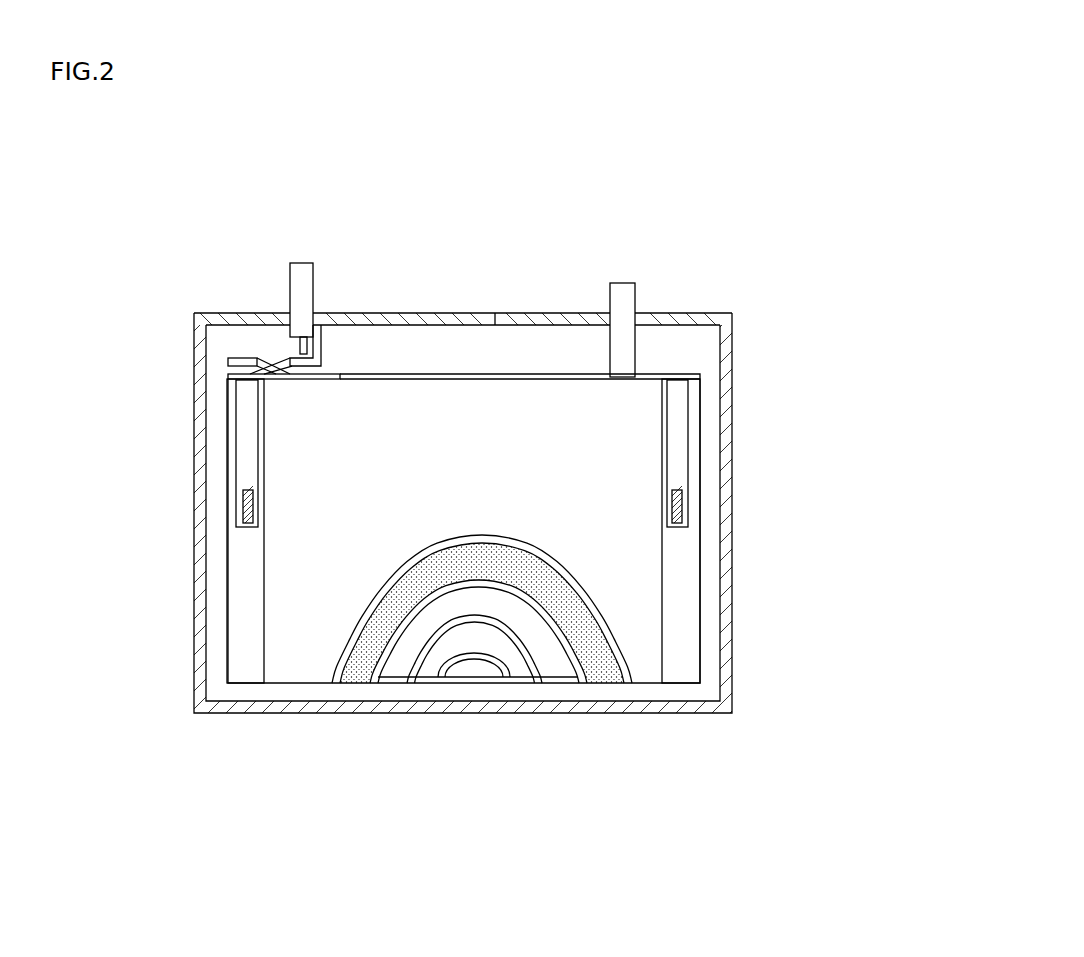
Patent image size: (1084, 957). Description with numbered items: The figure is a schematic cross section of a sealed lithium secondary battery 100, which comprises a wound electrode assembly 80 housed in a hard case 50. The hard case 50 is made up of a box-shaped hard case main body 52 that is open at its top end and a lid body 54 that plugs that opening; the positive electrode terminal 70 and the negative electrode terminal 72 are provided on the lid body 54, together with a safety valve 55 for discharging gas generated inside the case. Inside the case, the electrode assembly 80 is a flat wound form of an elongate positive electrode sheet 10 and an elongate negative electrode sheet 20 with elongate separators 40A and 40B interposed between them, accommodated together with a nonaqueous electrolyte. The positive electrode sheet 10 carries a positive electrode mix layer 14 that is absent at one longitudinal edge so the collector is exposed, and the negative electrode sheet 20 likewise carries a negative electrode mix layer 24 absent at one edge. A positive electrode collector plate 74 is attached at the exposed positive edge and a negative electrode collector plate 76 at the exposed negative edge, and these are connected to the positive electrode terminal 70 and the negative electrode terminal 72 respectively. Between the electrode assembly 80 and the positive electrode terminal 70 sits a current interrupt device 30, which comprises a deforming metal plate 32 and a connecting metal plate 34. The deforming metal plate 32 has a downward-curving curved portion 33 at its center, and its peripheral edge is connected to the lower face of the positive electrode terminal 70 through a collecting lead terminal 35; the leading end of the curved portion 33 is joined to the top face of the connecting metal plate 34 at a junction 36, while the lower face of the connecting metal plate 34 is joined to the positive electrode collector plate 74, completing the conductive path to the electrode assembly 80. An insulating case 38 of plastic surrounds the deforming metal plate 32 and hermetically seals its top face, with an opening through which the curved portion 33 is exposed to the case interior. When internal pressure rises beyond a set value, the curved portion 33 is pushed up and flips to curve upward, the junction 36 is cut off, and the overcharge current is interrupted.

The sealed lithium secondary battery 100 is at (730, 202).
The wound electrode assembly 80 is at (408, 394).
The positive electrode sheet 10 is at (353, 665).
The positive electrode mix layer 14 is at (478, 635).
The negative electrode sheet 20 is at (425, 663).
The negative electrode mix layer 24 is at (475, 652).
The separator 40A is at (293, 663).
The separator 40B is at (395, 665).
The hard case 50 is at (742, 526).
The hard case main body 52 is at (735, 660).
The lid body 54 is at (575, 313).
The safety valve 55 is at (481, 313).
The positive electrode terminal 70 is at (303, 263).
The negative electrode terminal 72 is at (620, 292).
The positive electrode collector plate 74 is at (245, 440).
The negative electrode collector plate 76 is at (678, 402).
The current interrupt device 30 is at (213, 339).
The deforming metal plate 32 is at (235, 358).
The curved portion 33 is at (222, 390).
The connecting metal plate 34 is at (310, 385).
The collecting lead terminal 35 is at (293, 347).
The junction 36 is at (270, 385).
The insulating case 38 is at (323, 345).